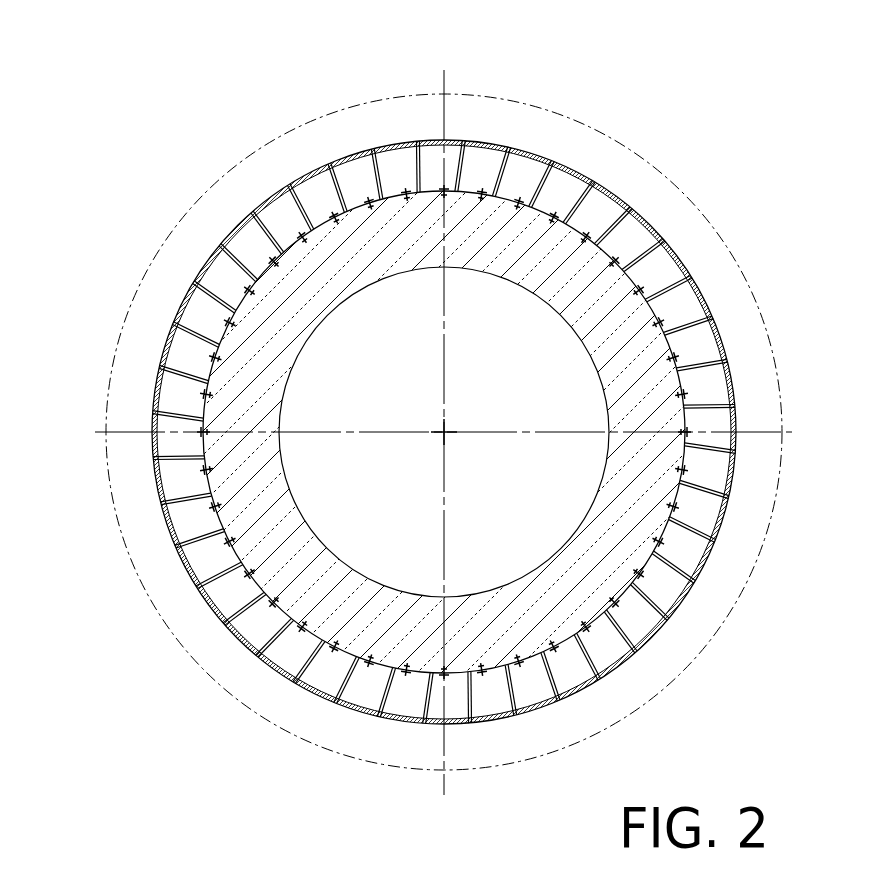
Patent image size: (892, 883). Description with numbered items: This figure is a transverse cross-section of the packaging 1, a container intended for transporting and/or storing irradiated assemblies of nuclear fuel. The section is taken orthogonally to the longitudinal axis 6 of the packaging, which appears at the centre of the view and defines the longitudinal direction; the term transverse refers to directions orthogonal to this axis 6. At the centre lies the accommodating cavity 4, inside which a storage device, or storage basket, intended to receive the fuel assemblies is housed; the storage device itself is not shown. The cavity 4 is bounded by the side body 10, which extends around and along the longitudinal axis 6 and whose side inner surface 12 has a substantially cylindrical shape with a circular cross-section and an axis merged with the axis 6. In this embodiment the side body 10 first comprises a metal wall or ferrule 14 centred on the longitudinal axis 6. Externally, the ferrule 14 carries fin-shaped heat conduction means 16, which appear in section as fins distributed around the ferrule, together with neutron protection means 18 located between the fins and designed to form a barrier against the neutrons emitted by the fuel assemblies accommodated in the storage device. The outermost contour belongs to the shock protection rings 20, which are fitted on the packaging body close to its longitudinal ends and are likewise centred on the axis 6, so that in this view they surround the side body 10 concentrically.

The packaging 1 is at (245, 116).
The accommodating cavity 4 is at (508, 377).
The longitudinal axis 6 is at (445, 433).
The side body 10 is at (105, 526).
The side inner surface 12 is at (280, 402).
The ferrule 14 is at (297, 330).
The fin-shaped heat conduction means 16 is at (185, 325).
The neutron protection means 18 is at (180, 350).
The shock protection rings 20 is at (179, 599).